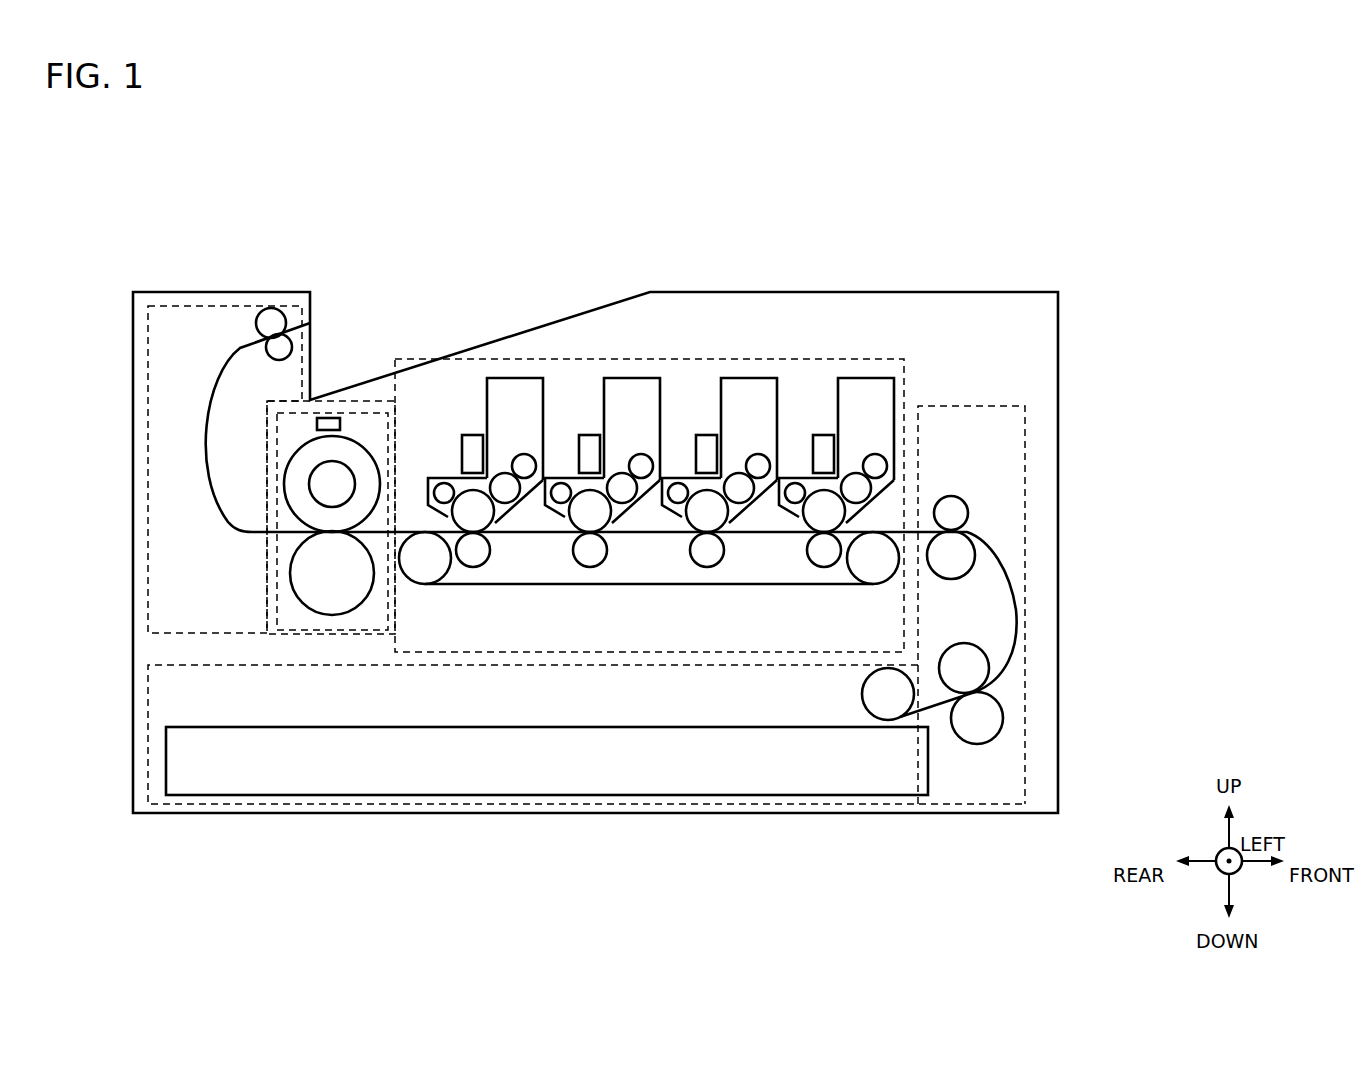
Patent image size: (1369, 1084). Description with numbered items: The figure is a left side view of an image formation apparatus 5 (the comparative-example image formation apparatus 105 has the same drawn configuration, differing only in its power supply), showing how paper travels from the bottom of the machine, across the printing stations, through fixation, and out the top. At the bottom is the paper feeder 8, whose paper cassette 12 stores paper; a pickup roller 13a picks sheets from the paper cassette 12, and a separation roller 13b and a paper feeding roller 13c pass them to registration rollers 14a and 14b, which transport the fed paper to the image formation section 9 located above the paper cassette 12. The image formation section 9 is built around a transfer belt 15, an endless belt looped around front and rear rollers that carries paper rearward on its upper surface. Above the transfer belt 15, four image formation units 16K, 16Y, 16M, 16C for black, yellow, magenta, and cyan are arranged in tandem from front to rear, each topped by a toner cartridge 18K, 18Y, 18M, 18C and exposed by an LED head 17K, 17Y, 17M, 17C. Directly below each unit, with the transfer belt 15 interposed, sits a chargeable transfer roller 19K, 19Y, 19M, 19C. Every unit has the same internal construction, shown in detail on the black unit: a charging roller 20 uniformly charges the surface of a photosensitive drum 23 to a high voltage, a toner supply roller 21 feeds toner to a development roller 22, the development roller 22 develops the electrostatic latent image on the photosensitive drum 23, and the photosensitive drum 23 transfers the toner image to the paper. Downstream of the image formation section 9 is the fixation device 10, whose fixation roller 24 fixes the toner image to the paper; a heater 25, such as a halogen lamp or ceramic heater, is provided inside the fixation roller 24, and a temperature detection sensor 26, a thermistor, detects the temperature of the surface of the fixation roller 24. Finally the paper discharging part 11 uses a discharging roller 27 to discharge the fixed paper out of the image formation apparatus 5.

The image formation apparatus 5 is at (148, 234).
The image formation apparatus 105 is at (568, 509).
The paper feeder 8 is at (318, 800).
The image formation section 9 is at (418, 357).
The fixation device 10 is at (338, 400).
The paper discharging part 11 is at (213, 304).
The paper cassette 12 is at (513, 785).
The pickup roller 13a is at (888, 697).
The separation roller 13b is at (977, 733).
The paper feeding roller 13c is at (985, 668).
The registration roller 14a is at (975, 555).
The registration roller 14b is at (968, 513).
The transfer belt 15 is at (632, 585).
The image formation unit 16C is at (505, 401).
The image formation unit 16M is at (617, 381).
The image formation unit 16Y is at (735, 381).
The image formation unit 16K is at (874, 439).
The LED head 17C is at (470, 433).
The LED head 17M is at (585, 433).
The LED head 17Y is at (702, 433).
The LED head 17K is at (823, 433).
The toner cartridge 18C is at (528, 377).
The toner cartridge 18M is at (641, 377).
The toner cartridge 18Y is at (758, 377).
The toner cartridge 18K is at (873, 377).
The transfer roller 19C is at (474, 556).
The transfer roller 19M is at (591, 556).
The transfer roller 19Y is at (708, 556).
The transfer roller 19K is at (825, 556).
The charging roller 20 is at (795, 500).
The toner supply roller 21 is at (884, 458).
The development roller 22 is at (862, 472).
The photosensitive drum 23 is at (812, 524).
The fixation roller 24 is at (357, 447).
The heater 25 is at (318, 490).
The temperature detection sensor 26 is at (317, 425).
The discharging roller 27 is at (271, 308).